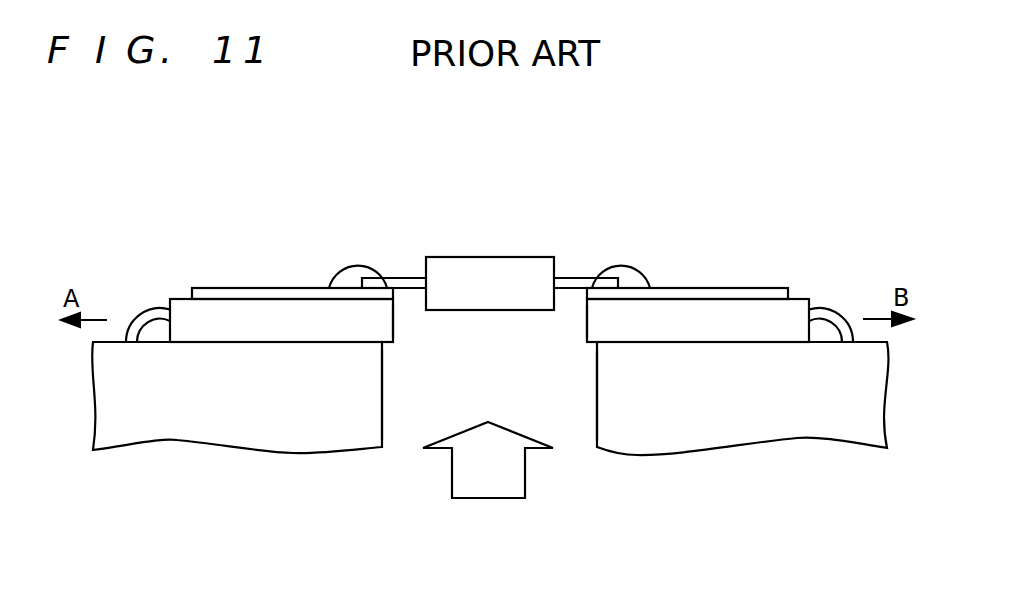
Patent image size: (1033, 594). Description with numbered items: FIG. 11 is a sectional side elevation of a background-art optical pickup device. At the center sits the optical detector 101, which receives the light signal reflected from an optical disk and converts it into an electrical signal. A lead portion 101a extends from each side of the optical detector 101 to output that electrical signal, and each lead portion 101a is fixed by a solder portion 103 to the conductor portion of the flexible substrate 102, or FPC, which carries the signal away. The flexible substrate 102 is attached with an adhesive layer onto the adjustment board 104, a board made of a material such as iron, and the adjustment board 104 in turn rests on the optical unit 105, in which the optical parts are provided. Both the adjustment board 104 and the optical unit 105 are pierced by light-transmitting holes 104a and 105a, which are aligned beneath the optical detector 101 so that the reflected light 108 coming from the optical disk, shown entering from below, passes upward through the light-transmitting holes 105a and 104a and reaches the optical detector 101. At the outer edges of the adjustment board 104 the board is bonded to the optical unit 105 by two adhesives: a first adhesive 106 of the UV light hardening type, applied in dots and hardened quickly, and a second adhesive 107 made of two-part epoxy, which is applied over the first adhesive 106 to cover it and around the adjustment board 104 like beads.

The optical detector 101 is at (492, 267).
The lead portion 101a is at (577, 277).
The flexible substrate 102 is at (710, 293).
The solder portion 103 is at (630, 280).
The adjustment board 104 is at (795, 307).
The light-transmitting hole 104a is at (587, 322).
The optical unit 105 is at (739, 425).
The light-transmitting hole 105a is at (597, 367).
The first adhesive 106 is at (160, 333).
The second adhesive 107 is at (137, 327).
The reflected light 108 is at (513, 487).